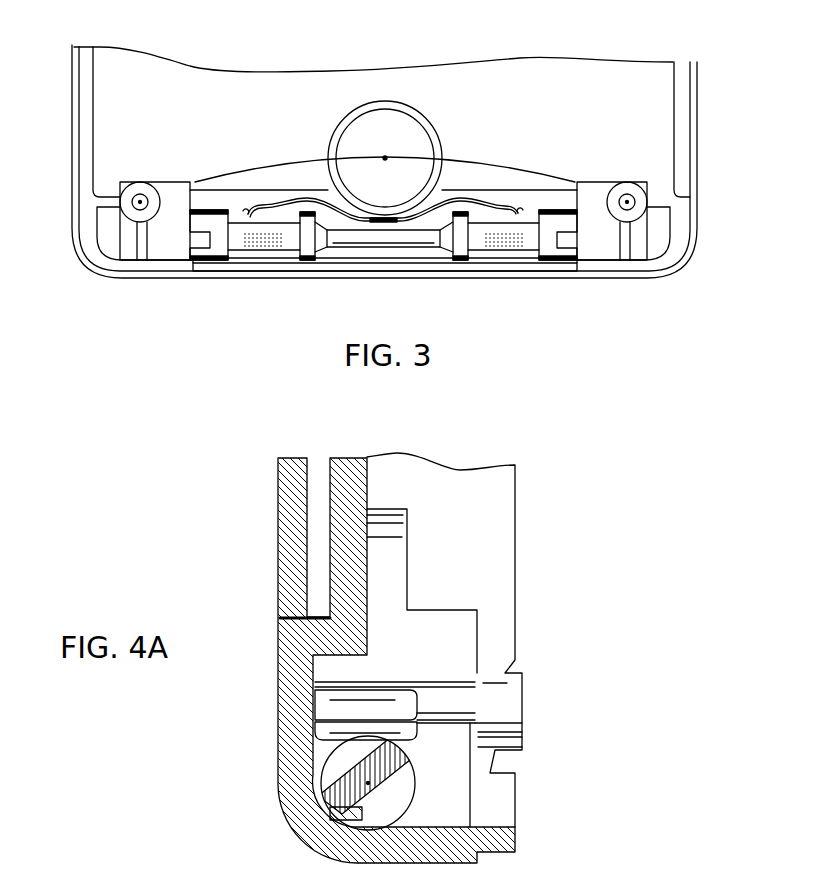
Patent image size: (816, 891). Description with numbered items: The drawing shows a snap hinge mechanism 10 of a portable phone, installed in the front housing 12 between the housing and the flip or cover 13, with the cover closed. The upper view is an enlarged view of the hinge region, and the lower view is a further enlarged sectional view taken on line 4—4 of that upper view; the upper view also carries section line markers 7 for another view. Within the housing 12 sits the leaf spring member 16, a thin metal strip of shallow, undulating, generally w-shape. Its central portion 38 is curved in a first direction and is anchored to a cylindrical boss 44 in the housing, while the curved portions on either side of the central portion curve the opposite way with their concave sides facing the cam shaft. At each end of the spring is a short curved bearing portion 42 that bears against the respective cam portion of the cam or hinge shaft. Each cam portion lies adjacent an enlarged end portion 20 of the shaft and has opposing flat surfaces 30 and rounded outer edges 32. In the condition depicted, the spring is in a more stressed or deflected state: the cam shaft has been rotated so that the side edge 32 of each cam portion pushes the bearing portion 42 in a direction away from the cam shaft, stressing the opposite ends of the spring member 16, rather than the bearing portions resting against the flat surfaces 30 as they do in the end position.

In FIG. 3, the snap hinge mechanism 10 is at (500, 276).
In FIG. 3, the front housing 12 is at (462, 70).
In FIG. 4A, the front housing 12 is at (350, 478).
In FIG. 4A, the flip or cover 13 is at (293, 533).
In FIG. 3, the leaf spring member 16 is at (320, 193).
In FIG. 4A, the leaf spring member 16 is at (350, 698).
In FIG. 3, the enlarged end portion 20 is at (207, 182).
In FIG. 3, the flat surface 30 is at (253, 245).
In FIG. 4A, the flat surface 30 is at (335, 780).
In FIG. 3, the rounded outer edge 32 is at (288, 225).
In FIG. 4A, the rounded outer edge 32 is at (342, 800).
In FIG. 3, the central portion 38 is at (385, 215).
In FIG. 3, the curved bearing portion 42 is at (247, 212).
In FIG. 4A, the curved bearing portion 42 is at (337, 723).
In FIG. 3, the cylindrical boss 44 is at (368, 107).
In FIG. 3, the section line 4— 4 is at (237, 0).
In FIG. 3, the section line 7 is at (46, 180).